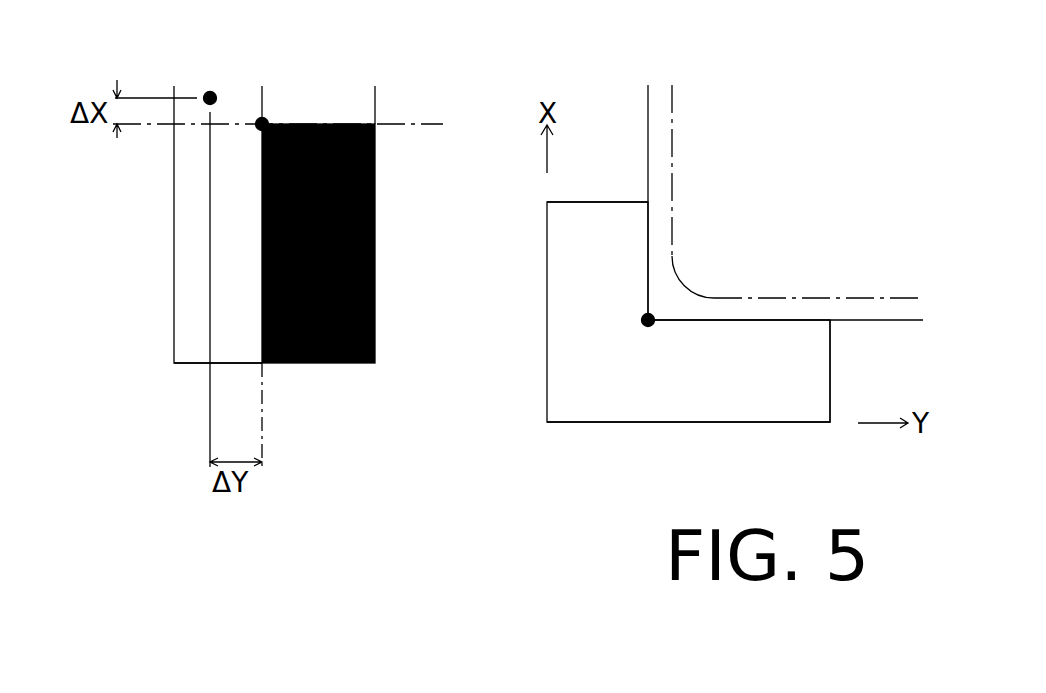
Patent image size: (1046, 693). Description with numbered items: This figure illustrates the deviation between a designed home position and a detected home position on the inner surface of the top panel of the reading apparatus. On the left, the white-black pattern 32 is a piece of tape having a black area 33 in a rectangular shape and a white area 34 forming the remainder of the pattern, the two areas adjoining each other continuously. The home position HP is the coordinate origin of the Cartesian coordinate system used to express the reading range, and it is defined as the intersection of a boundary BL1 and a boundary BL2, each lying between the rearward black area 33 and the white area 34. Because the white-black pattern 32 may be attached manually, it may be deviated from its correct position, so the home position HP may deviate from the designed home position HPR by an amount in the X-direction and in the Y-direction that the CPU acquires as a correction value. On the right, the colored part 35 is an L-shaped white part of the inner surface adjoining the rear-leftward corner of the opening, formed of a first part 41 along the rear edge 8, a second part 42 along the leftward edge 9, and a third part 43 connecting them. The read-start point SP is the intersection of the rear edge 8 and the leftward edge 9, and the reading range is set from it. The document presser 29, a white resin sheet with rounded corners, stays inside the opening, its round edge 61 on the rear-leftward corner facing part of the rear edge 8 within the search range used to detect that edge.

The rear edge 8 is at (880, 316).
The leftward edge 9 is at (650, 116).
The document presser 29 is at (675, 172).
The white-black pattern 32 is at (172, 252).
The black area 33 is at (365, 363).
The white area 34 is at (180, 322).
The colored part 35 is at (545, 343).
The first part 41 is at (780, 388).
The second part 42 is at (588, 208).
The third part 43 is at (568, 397).
The round edge 61 is at (677, 285).
The designed home position HPR is at (212, 90).
The home position HP is at (265, 121).
The boundary BL1 is at (388, 125).
The boundary BL2 is at (263, 408).
The read-start point SP is at (647, 327).